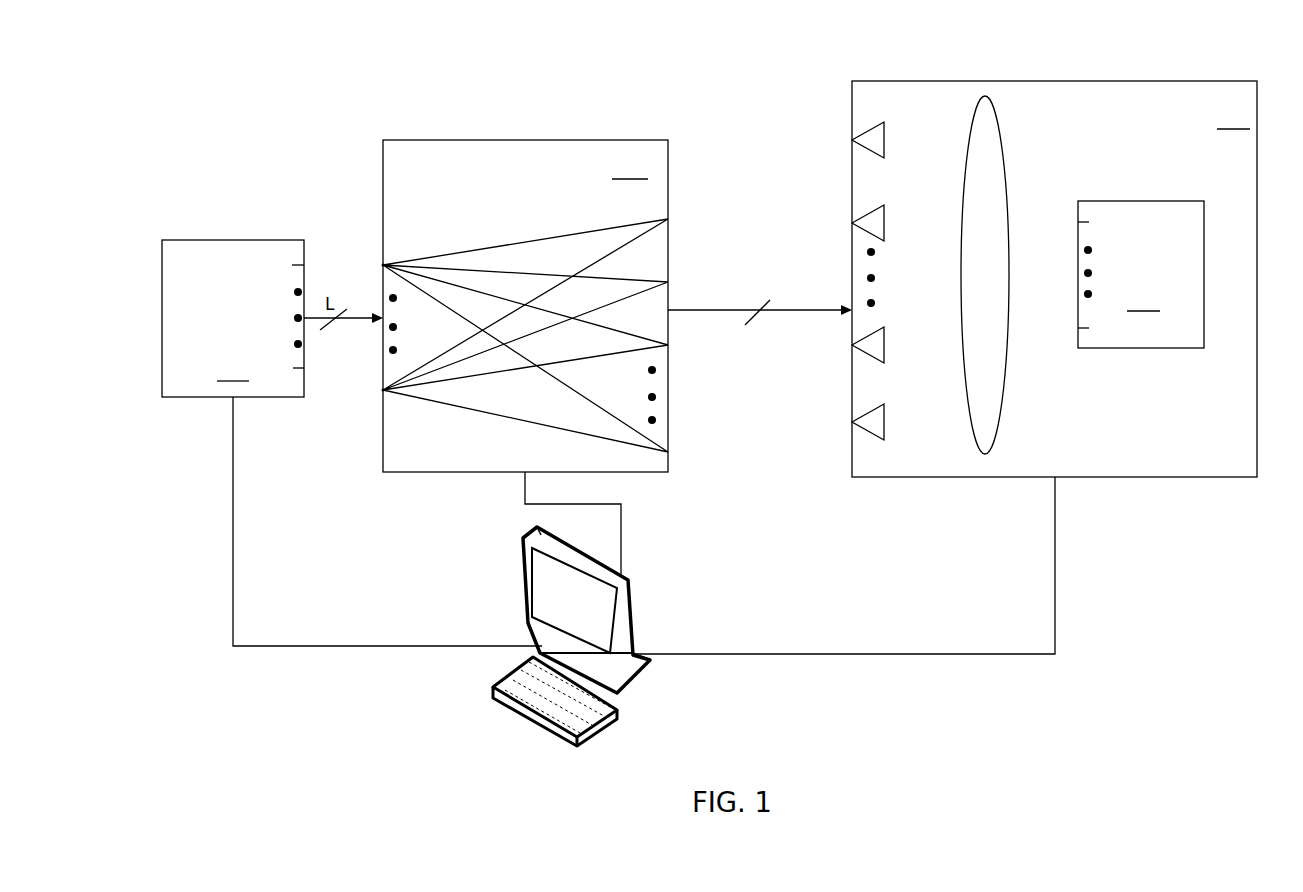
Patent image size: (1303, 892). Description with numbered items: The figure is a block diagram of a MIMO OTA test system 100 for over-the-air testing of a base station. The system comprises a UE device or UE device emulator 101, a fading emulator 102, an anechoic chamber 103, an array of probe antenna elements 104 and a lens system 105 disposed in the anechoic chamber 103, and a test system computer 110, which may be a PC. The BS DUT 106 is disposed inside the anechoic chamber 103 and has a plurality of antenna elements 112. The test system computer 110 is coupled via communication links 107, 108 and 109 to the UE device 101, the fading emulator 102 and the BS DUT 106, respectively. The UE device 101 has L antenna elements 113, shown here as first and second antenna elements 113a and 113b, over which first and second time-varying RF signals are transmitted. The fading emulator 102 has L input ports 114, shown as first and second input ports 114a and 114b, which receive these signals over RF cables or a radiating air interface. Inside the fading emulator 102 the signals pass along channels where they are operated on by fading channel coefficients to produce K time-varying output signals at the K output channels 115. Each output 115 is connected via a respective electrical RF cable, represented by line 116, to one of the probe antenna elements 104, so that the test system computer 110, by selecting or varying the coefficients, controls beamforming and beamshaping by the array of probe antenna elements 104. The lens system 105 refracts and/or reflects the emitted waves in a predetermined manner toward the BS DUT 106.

The MIMO OTA test system 100 is at (252, 91).
The UE device or UE device emulator 101 is at (233, 318).
The fading emulator 102 is at (525, 306).
The anechoic chamber 103 is at (1054, 279).
The array of probe antenna elements 104 is at (888, 267).
The lens system 105 is at (1000, 118).
The BS DUT 106 is at (1141, 274).
The communication link 107 is at (233, 582).
The communication link 108 is at (621, 533).
The communication link 109 is at (1055, 581).
The test system computer 110 is at (543, 536).
The antenna elements 112 is at (1104, 281).
The antenna elements 113 is at (315, 240).
The first antenna element 113a is at (296, 262).
The second antenna element 113b is at (298, 371).
The input ports 114 is at (364, 387).
The first input port 114a is at (383, 263).
The second input port 114b is at (383, 392).
The output channels 115 is at (699, 329).
The electrical RF cable 116 is at (789, 312).